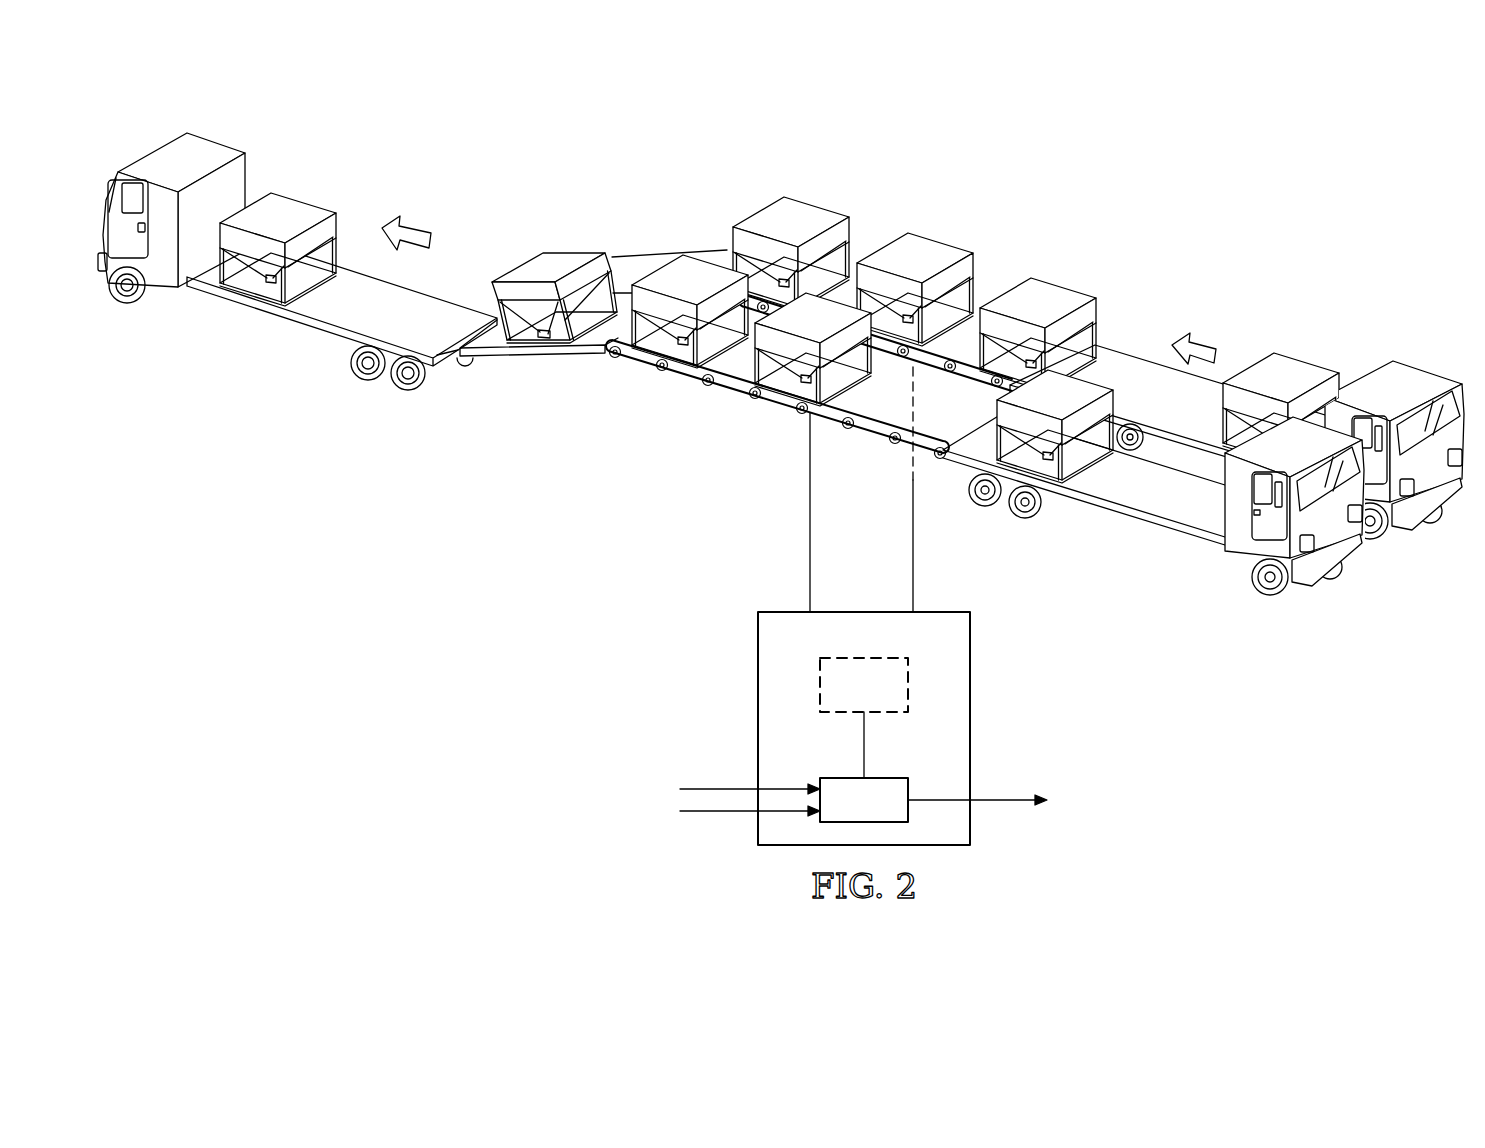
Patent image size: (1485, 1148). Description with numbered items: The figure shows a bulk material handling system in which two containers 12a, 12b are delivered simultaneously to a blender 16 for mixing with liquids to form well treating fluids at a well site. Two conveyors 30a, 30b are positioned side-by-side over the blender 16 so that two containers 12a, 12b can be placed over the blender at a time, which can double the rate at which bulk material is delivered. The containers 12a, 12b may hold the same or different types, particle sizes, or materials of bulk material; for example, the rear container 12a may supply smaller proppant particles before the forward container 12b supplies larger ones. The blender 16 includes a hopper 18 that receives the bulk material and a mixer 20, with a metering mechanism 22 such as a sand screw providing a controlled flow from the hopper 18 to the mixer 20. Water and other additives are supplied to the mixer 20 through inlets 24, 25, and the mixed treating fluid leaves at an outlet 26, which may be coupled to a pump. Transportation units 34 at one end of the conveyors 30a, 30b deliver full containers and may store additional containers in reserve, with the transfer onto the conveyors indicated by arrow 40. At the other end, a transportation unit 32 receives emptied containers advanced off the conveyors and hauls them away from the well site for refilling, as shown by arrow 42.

The container 12a is at (297, 210).
The container 12b is at (533, 267).
The blender 16 is at (915, 741).
The hopper 18 is at (850, 702).
The mixer 20 is at (842, 778).
The metering mechanism 22 is at (865, 747).
The inlet 24 is at (712, 785).
The inlet 25 is at (712, 815).
The outlet 26 is at (1005, 803).
The conveyor 30a is at (1103, 352).
The conveyor 30b is at (733, 397).
The transportation unit 32 is at (167, 155).
The transportation unit 34 is at (1412, 372).
The arrow 40 is at (1205, 345).
The arrow 42 is at (413, 227).